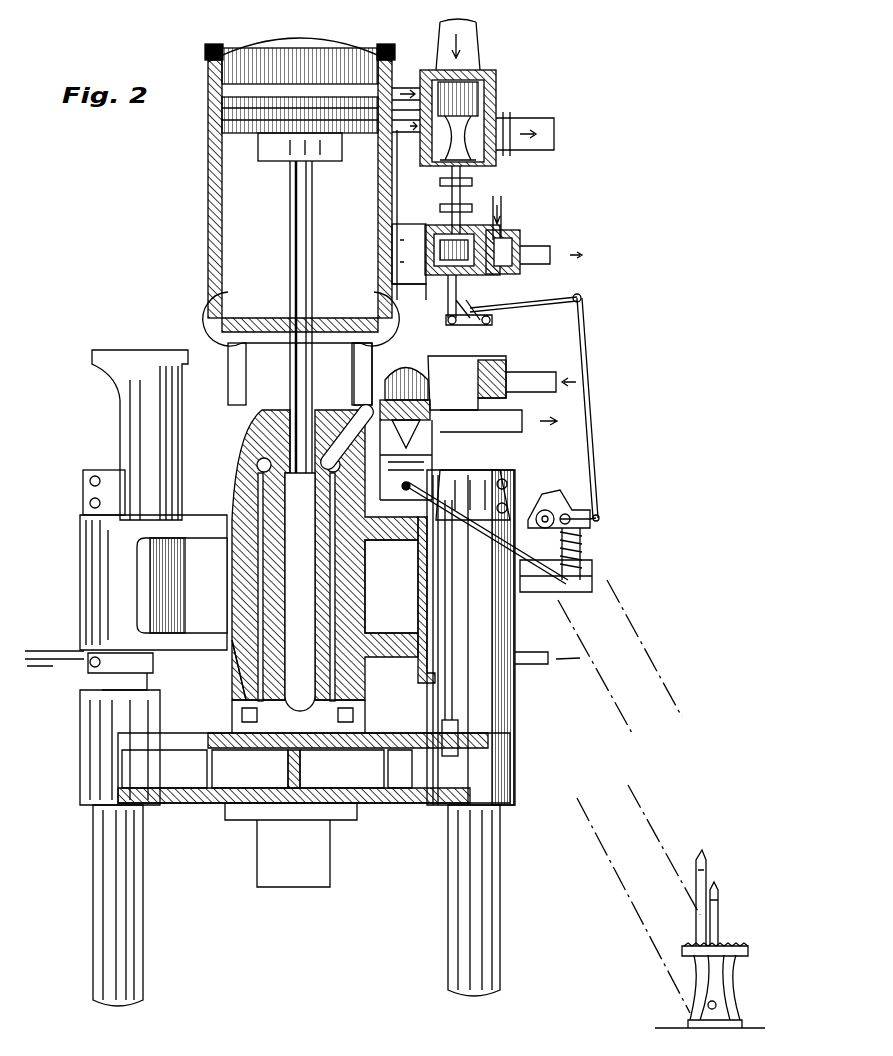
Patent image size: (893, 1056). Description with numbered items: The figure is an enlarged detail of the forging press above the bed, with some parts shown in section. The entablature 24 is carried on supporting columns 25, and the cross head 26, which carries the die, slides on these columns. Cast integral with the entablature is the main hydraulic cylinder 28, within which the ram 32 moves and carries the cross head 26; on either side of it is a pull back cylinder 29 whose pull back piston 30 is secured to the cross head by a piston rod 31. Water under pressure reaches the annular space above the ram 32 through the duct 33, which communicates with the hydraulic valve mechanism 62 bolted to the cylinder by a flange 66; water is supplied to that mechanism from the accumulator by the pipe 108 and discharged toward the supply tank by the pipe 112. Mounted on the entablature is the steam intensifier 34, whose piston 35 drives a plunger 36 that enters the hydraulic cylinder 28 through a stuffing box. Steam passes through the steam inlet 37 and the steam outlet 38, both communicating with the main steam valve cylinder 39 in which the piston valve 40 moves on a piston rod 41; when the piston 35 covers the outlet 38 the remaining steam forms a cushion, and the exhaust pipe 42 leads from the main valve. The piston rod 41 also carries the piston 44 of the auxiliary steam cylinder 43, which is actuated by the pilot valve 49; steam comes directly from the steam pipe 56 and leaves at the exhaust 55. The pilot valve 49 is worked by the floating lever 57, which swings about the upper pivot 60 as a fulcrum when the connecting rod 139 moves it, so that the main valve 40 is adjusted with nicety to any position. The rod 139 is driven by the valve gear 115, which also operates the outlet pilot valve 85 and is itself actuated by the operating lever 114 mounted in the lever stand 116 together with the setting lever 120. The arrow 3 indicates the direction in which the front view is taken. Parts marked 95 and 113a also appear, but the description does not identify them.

The arrow 3 is at (665, 257).
The entablature 24 is at (153, 602).
The supporting columns 25 is at (104, 886).
The cross head 26 is at (314, 793).
The main hydraulic cylinder 28 is at (252, 620).
The pull back cylinder 29 is at (130, 430).
The pull back piston 30 is at (448, 372).
The piston rod 31 is at (446, 608).
The ram 32 is at (286, 617).
The duct 33 is at (348, 440).
The steam intensifier 34 is at (214, 252).
The piston 35 is at (253, 117).
The piston rod or plunger 36 is at (294, 271).
The steam inlet 37 is at (403, 86).
The steam outlet 38 is at (412, 128).
The main steam valve cylinder 39 is at (496, 96).
The piston valve 40 is at (458, 100).
The piston rod 41 is at (452, 196).
The exhaust pipe 42 is at (525, 134).
The auxiliary steam cylinder 43 is at (428, 272).
The piston 44 is at (444, 240).
The pilot valve 49 is at (521, 240).
The exhaust 55 is at (522, 258).
The steam pipe 56 is at (498, 204).
The floating lever 57 is at (513, 299).
The upper pivot 60 is at (404, 490).
The hydraulic valve mechanism 62 is at (405, 376).
The flange 66 is at (356, 396).
The outlet pilot valve 85 is at (582, 580).
The bracket 95 is at (500, 494).
The pipe 108 is at (528, 380).
The pipe 112 is at (508, 428).
The intake pipe 113a is at (470, 32).
The operating lever 114 is at (708, 890).
The valve gear 115 is at (553, 504).
The lever stand 116 is at (730, 978).
The setting lever 120 is at (720, 920).
The connecting rod 139 is at (589, 368).